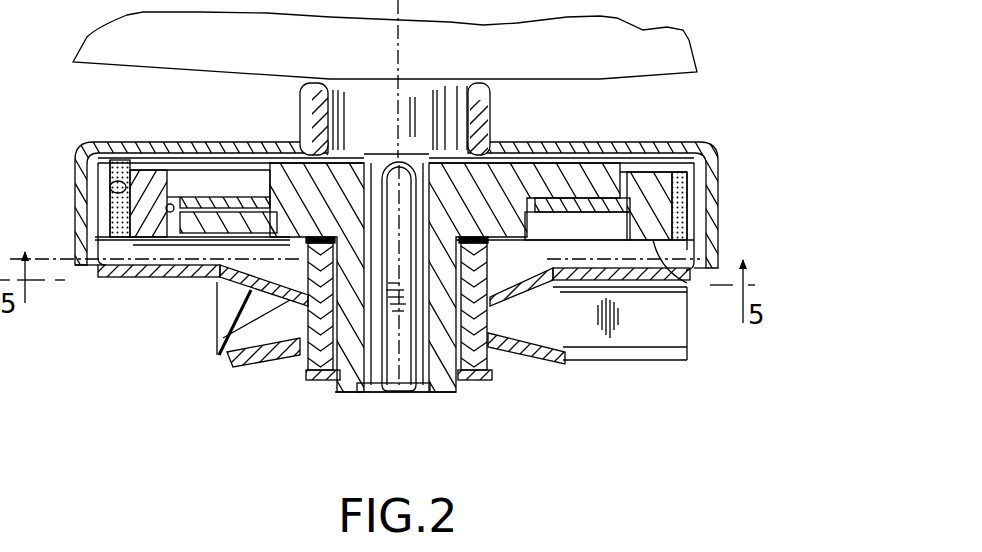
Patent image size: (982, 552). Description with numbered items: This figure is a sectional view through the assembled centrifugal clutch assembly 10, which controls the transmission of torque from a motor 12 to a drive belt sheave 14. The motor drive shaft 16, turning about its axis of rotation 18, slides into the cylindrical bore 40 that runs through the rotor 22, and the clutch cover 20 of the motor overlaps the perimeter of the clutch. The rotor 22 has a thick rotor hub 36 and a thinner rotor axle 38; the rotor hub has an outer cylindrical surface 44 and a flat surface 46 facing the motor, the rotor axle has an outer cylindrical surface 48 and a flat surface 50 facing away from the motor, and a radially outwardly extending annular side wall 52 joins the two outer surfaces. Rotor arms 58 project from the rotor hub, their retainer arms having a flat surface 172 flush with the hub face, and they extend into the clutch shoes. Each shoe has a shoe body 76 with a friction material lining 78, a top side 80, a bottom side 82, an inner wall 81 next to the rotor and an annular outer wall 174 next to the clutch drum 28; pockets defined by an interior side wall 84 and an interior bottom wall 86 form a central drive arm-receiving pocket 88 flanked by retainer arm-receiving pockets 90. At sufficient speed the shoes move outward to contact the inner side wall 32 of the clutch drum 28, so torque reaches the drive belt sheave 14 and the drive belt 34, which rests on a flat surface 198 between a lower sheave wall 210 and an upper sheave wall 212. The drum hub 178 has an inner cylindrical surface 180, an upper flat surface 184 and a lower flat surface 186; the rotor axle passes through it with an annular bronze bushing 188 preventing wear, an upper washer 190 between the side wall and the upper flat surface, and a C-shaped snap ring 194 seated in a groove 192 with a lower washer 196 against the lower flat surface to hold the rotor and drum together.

The centrifugal clutch assembly 10 is at (98, 402).
The motor 12 is at (678, 44).
The drive belt sheave 14 is at (580, 429).
The motor drive shaft 16 is at (364, 392).
The axis of rotation 18 is at (391, 382).
The clutch cover 20 is at (84, 196).
The rotor 22 is at (295, 256).
The clutch drum 28 is at (92, 154).
The inner side wall 32 is at (88, 190).
The drive belt 34 is at (217, 318).
The rotor hub 36 is at (497, 207).
The rotor axle 38 is at (335, 392).
The cylindrical bore 40 is at (422, 378).
The outer cylindrical surface 44 is at (265, 195).
The flat surface 46 is at (548, 175).
The outer cylindrical surface 48 is at (300, 366).
The flat surface 50 is at (340, 396).
The annular side wall 52 is at (300, 235).
The rotor arms 58 is at (222, 200).
The shoe body 76 is at (305, 170).
The friction material lining 78 is at (116, 182).
The top side 80 is at (277, 173).
The inner wall 81 is at (440, 168).
The bottom side 82 is at (113, 268).
The interior side wall 84 is at (168, 175).
The interior bottom wall 86 is at (176, 205).
The drive arm-receiving pocket 88 is at (160, 272).
The retainer arm-receiving pockets 90 is at (712, 160).
The flat surface 172 is at (592, 180).
The annular outer wall 174 is at (112, 219).
The drum hub 178 is at (485, 366).
The inner cylindrical surface 180 is at (451, 390).
The upper flat surface 184 is at (489, 242).
The lower flat surface 186 is at (482, 374).
The annular bronze bushing 188 is at (235, 366).
The upper washer 190 is at (520, 238).
The groove 192 is at (308, 377).
The C-shaped snap ring 194 is at (466, 393).
The lower washer 196 is at (472, 374).
The flat surface 198 is at (217, 352).
The lower sheave wall 210 is at (545, 368).
The upper sheave wall 212 is at (571, 298).